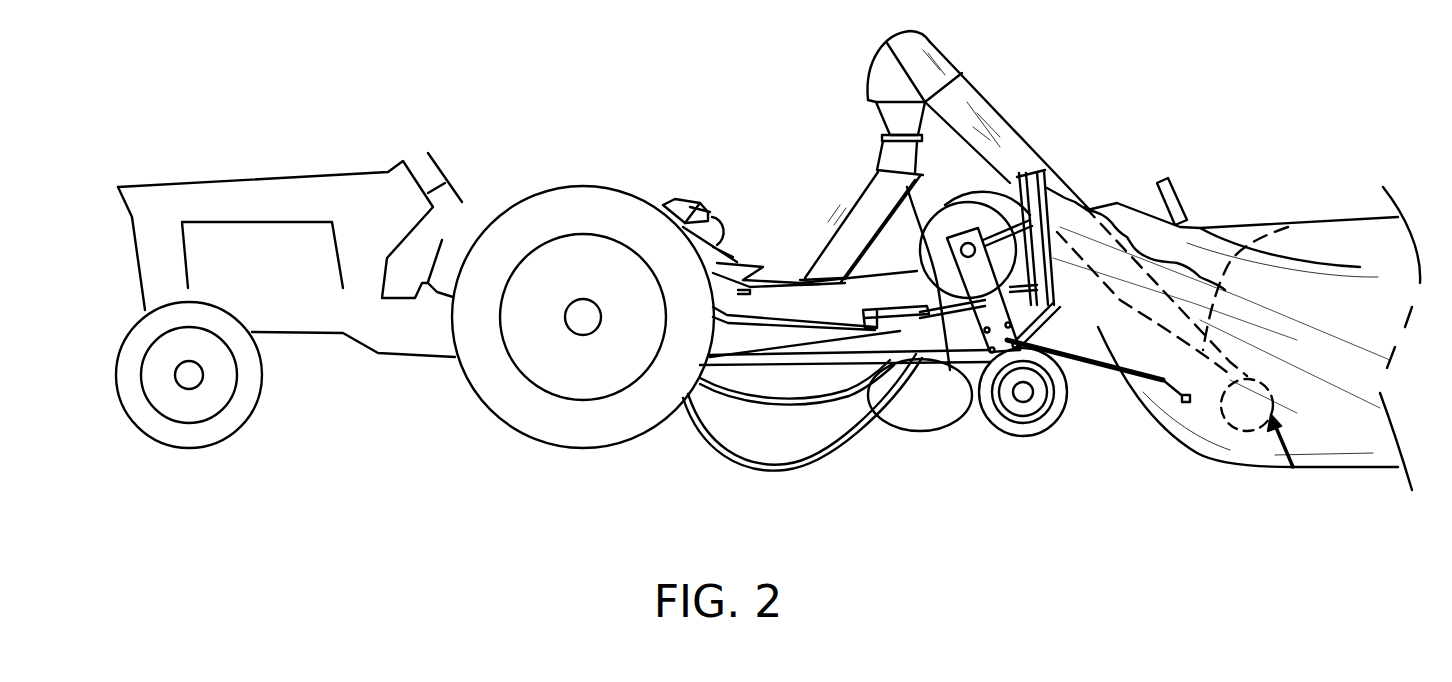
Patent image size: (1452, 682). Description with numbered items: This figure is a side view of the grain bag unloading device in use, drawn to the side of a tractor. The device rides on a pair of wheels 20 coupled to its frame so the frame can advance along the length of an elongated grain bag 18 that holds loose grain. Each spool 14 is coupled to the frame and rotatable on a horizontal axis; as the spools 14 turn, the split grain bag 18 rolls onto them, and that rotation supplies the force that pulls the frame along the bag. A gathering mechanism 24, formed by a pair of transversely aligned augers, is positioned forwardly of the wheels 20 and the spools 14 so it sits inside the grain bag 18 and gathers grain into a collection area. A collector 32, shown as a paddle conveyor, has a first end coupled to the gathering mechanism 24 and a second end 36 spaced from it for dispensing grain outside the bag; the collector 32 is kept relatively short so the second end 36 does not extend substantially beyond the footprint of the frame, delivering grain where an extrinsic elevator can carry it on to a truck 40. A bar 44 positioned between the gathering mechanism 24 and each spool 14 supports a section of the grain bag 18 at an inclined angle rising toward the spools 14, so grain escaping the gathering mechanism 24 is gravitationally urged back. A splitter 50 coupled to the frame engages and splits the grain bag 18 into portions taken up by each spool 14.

The spool 14 is at (950, 370).
The grain bag 18 is at (1223, 250).
The wheel 20 is at (1022, 433).
The gathering mechanism 24 is at (1298, 472).
The collector 32 is at (997, 123).
The second end 36 is at (882, 135).
The truck 40 is at (583, 433).
The bar 44 is at (1185, 398).
The splitter 50 is at (1181, 178).